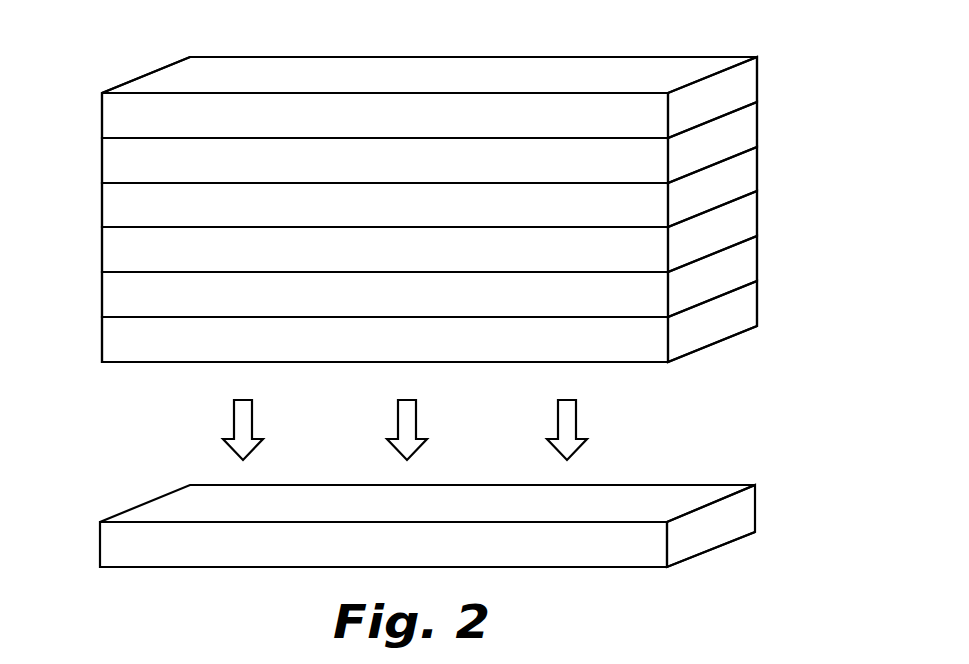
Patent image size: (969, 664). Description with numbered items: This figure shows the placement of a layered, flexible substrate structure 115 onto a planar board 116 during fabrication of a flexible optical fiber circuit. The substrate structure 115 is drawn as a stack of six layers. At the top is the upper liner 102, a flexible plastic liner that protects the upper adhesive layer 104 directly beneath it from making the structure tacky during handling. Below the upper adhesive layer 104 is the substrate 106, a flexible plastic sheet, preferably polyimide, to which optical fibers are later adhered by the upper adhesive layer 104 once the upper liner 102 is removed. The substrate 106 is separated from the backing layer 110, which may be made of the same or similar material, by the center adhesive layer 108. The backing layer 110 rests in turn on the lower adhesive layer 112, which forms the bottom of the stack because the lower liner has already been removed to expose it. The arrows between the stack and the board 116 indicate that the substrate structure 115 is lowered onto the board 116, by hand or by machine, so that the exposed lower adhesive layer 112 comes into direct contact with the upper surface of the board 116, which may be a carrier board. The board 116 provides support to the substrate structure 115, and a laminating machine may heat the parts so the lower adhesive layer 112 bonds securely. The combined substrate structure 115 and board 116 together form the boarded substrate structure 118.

The upper liner 102 is at (735, 89).
The upper adhesive layer 104 is at (735, 132).
The substrate 106 is at (735, 177).
The center adhesive layer 108 is at (735, 222).
The backing layer 110 is at (735, 269).
The lower adhesive layer 112 is at (735, 314).
The substrate structure 115 is at (702, 377).
The board 116 is at (734, 515).
The boarded substrate structure 118 is at (724, 587).